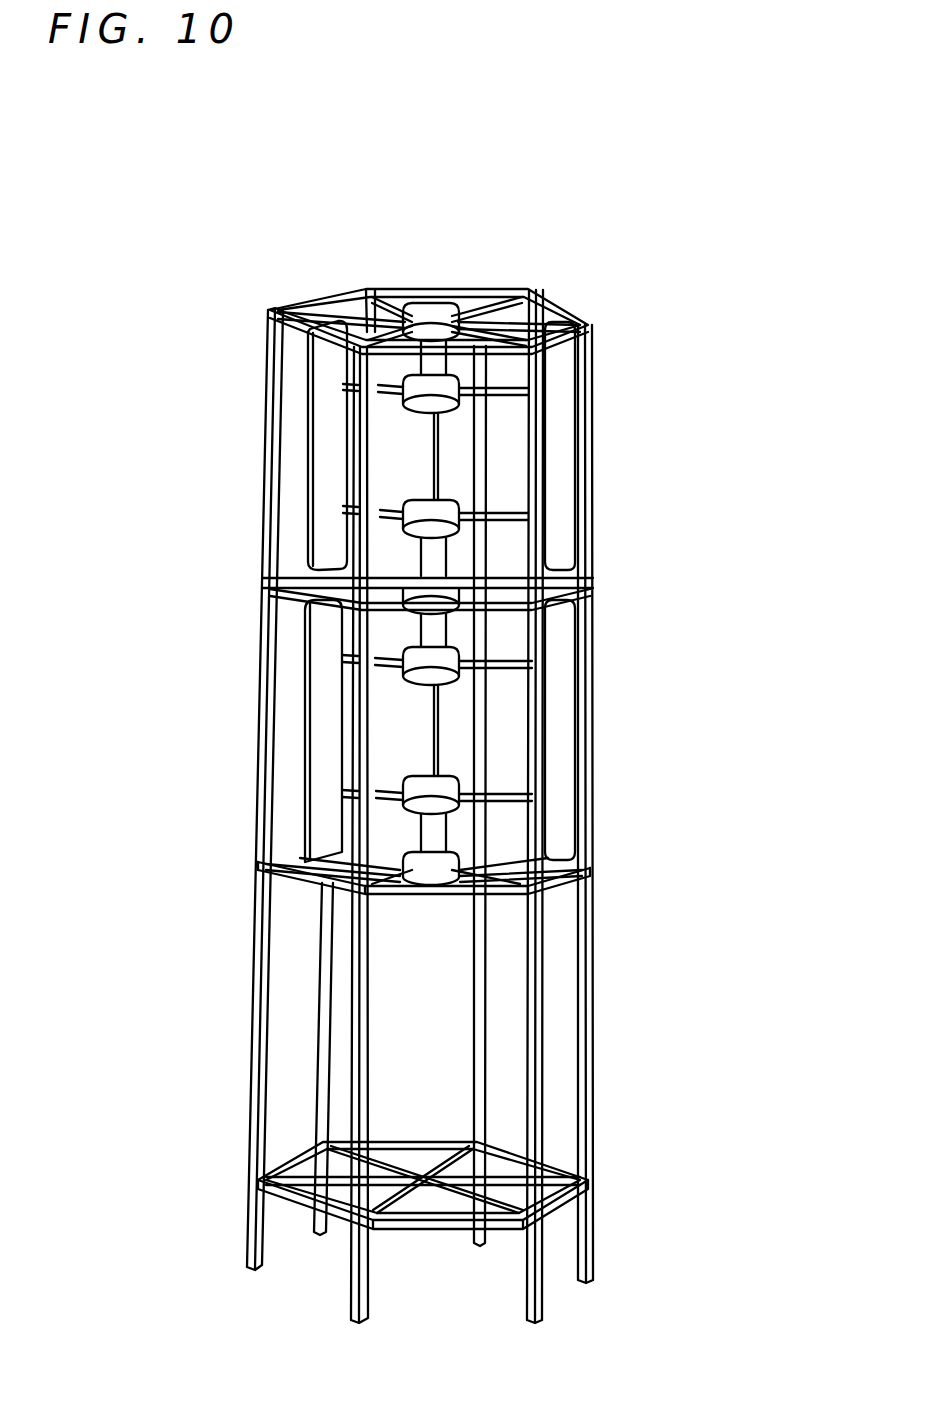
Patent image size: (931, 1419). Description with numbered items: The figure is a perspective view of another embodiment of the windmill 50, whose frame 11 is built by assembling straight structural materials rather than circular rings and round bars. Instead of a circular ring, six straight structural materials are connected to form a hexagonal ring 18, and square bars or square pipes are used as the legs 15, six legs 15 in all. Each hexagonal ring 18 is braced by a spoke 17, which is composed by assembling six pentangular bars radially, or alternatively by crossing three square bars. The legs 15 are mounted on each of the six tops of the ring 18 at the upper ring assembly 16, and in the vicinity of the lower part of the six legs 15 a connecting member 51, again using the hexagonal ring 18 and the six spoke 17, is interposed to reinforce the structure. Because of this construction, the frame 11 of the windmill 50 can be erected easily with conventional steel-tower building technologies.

The frame 11 is at (612, 764).
The legs 15 is at (592, 433).
The upper frame unit 16 is at (480, 203).
The spoke 17 is at (483, 307).
The hexagonal ring 18 is at (563, 303).
The windmill 50 is at (648, 487).
The connecting member 51 is at (738, 1083).